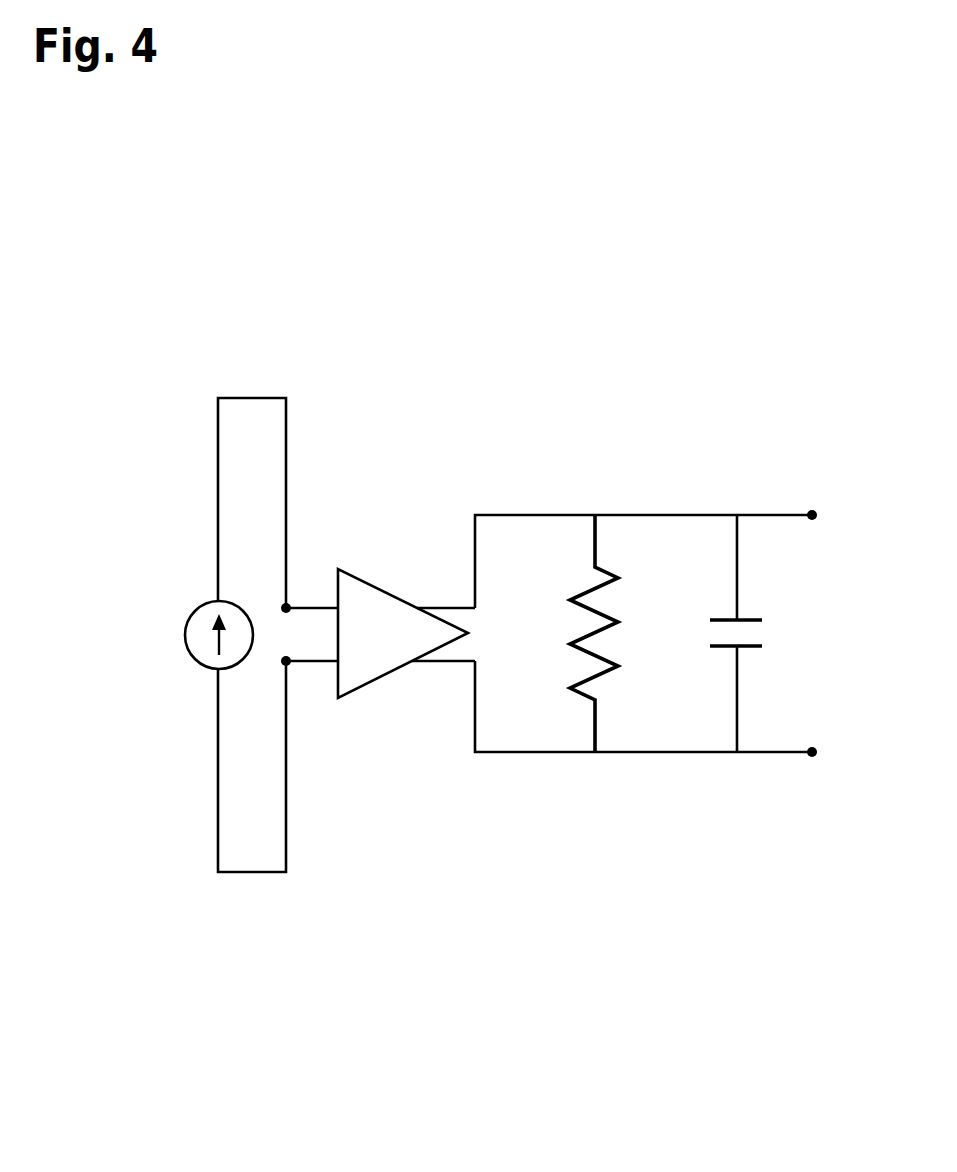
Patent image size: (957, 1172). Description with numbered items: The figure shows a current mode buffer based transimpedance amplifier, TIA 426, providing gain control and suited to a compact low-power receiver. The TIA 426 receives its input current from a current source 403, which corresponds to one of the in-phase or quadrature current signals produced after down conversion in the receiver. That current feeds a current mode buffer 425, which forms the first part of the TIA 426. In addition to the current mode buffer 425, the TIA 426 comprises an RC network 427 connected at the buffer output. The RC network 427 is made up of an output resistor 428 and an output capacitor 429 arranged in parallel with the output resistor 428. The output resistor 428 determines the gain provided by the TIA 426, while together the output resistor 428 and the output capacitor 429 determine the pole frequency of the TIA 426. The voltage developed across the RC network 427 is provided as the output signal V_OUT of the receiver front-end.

The current source 403 is at (248, 613).
The current mode buffer 425 is at (390, 677).
The TIA 426 is at (834, 270).
The RC network 427 is at (757, 488).
The output resistor 428 is at (598, 542).
The output capacitor 429 is at (720, 619).